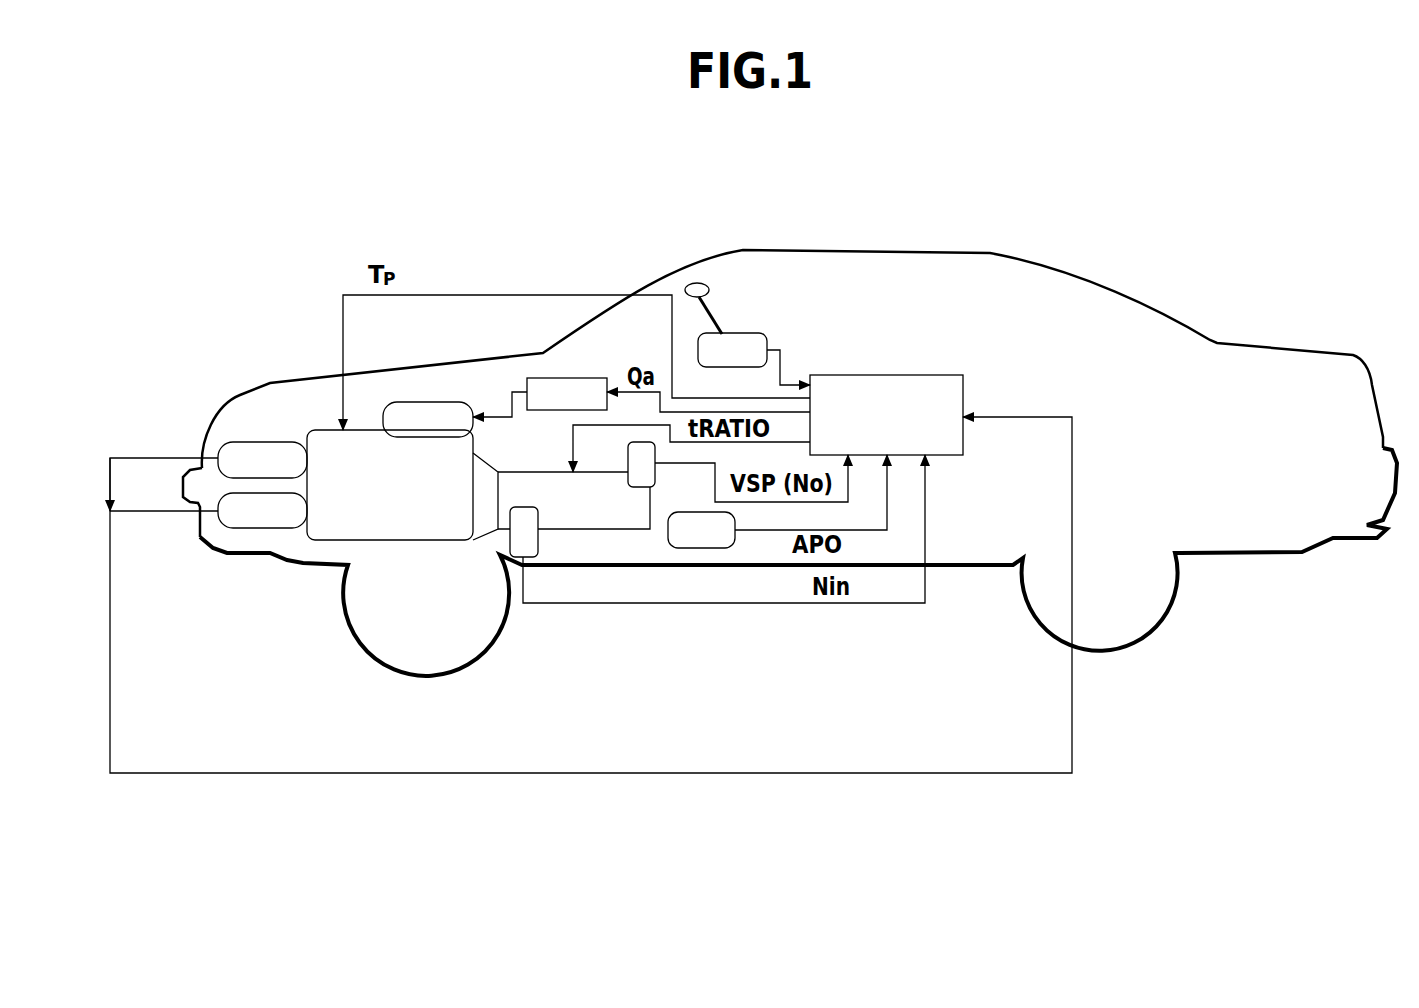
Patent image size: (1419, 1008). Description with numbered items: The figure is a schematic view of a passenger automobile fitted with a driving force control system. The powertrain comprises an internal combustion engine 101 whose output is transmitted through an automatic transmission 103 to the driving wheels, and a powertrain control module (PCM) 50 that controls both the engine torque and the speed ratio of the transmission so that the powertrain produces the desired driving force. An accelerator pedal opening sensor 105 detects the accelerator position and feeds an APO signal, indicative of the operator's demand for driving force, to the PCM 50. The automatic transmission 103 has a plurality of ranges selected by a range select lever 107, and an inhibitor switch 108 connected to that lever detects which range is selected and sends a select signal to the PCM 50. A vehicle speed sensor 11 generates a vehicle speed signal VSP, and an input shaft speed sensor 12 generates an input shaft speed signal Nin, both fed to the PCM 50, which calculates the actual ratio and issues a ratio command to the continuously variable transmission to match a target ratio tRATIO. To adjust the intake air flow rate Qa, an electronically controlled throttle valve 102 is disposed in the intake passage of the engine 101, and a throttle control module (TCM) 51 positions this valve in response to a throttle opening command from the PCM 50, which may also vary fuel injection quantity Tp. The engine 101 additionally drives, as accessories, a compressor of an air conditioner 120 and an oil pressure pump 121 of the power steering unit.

The engine 101 is at (397, 540).
The electronically controlled throttle valve 102 is at (418, 403).
The automatic transmission 103 is at (628, 517).
The accelerator pedal opening sensor 105 is at (718, 548).
The range select lever 107 is at (697, 282).
The inhibitor switch 108 is at (752, 340).
The vehicle speed sensor 11 is at (643, 487).
The input shaft speed sensor 12 is at (520, 530).
The compressor of an air conditioner 120 is at (252, 457).
The oil pressure pump 121 is at (253, 517).
The powertrain control module 50 is at (947, 457).
The TCM 51 is at (548, 378).